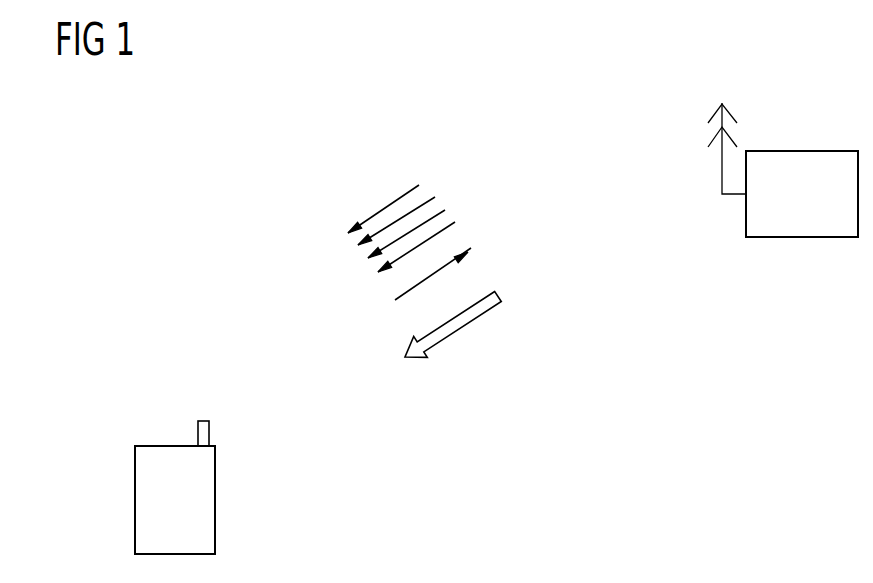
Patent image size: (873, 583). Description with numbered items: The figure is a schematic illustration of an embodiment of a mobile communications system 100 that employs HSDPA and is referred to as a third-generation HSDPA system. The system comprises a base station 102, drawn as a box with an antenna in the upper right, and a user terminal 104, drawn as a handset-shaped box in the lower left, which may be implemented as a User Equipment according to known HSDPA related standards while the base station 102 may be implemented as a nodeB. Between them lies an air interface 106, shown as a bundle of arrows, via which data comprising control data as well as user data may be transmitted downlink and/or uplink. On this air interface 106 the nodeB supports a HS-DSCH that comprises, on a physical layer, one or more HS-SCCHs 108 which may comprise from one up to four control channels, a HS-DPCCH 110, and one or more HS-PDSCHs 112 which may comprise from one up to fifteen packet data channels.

The mobile communications system 100 is at (124, 196).
The base station 102 is at (802, 150).
The user terminal (UE) 104 is at (215, 500).
The air interface 106 is at (413, 227).
The HS-SCCH 108 is at (418, 187).
The HS-DPCCH 110 is at (462, 252).
The HS-PDSCH 112 is at (465, 327).